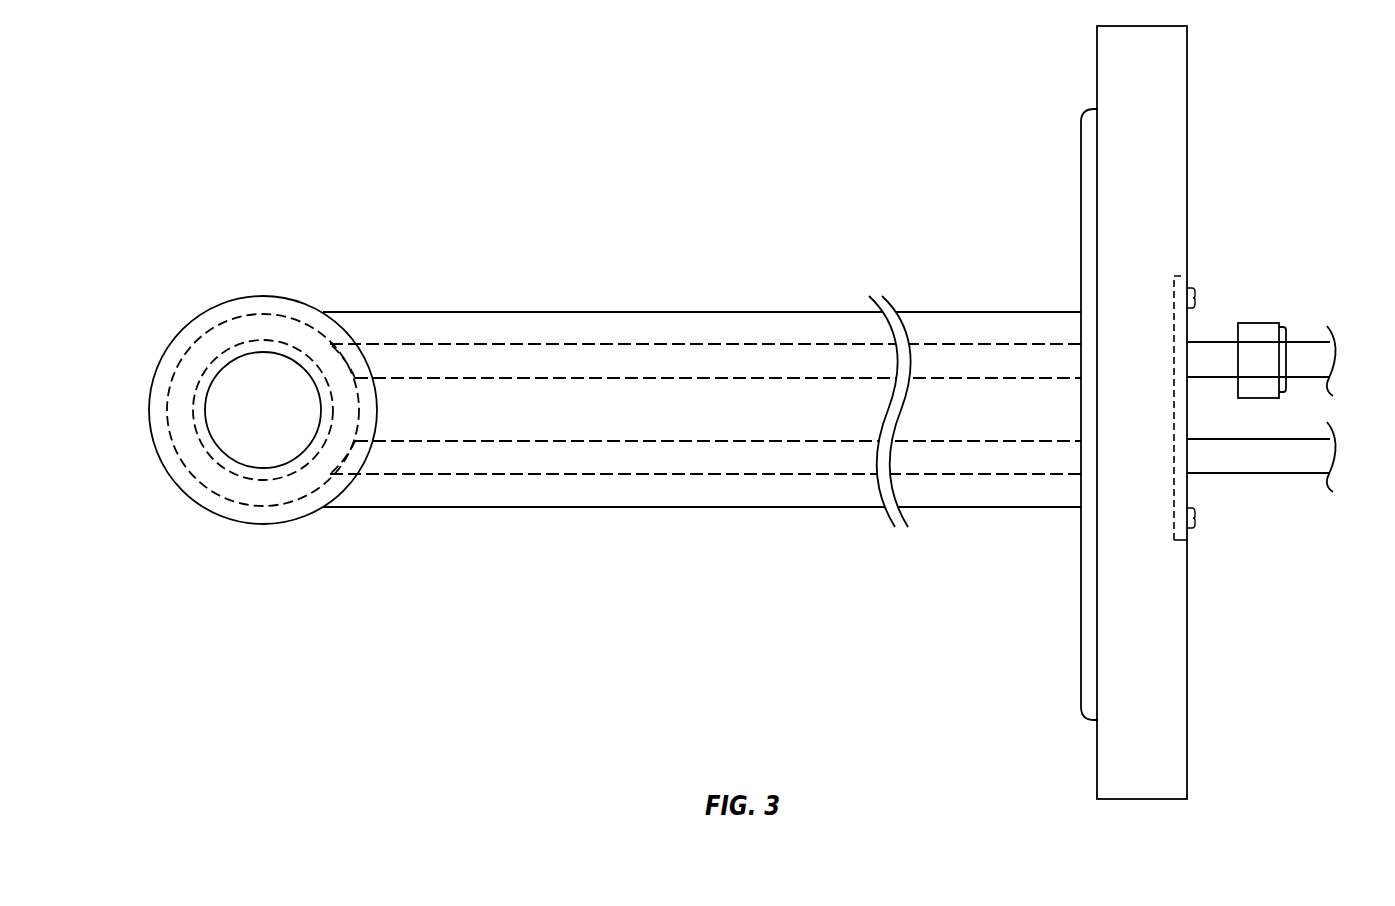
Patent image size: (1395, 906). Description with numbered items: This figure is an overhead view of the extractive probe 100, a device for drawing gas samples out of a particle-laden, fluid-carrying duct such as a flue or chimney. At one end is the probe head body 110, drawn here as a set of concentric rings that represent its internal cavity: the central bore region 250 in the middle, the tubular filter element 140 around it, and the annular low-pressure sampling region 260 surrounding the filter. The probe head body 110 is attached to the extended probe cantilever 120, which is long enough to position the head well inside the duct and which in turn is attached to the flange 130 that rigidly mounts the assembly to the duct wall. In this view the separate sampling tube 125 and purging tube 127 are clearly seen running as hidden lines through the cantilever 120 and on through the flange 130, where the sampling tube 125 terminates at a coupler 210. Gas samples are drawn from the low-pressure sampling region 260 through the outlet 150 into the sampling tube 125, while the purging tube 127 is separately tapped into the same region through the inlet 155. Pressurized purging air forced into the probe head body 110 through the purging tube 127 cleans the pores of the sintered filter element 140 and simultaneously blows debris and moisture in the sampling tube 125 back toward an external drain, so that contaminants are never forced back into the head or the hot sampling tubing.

The extractive probe 100 is at (593, 126).
The probe head body 110 is at (203, 510).
The probe cantilever 120 is at (462, 312).
The sampling tube 125 is at (593, 344).
The purging tube 127 is at (562, 475).
The flange 130 is at (1097, 75).
The tubular filter element 140 is at (199, 441).
The outlet 150 is at (340, 357).
The inlet 155 is at (340, 460).
The coupler 210 is at (1256, 322).
The central bore region 250 is at (265, 397).
The low-pressure sampling region 260 is at (208, 358).